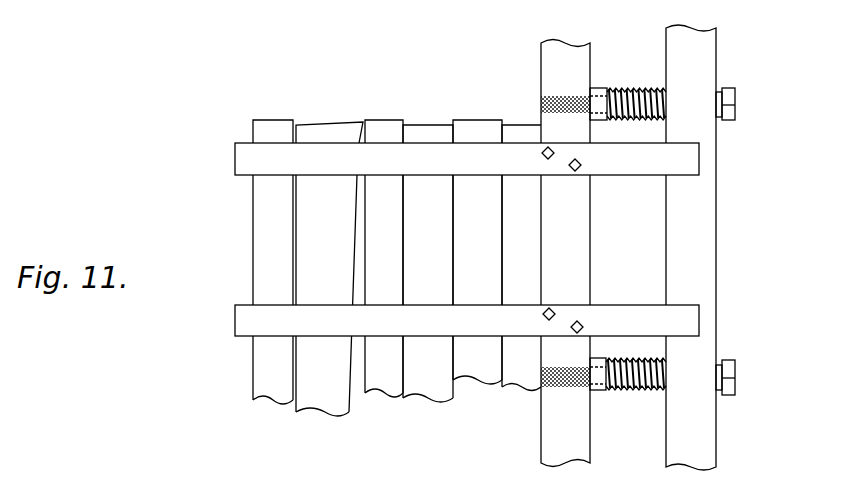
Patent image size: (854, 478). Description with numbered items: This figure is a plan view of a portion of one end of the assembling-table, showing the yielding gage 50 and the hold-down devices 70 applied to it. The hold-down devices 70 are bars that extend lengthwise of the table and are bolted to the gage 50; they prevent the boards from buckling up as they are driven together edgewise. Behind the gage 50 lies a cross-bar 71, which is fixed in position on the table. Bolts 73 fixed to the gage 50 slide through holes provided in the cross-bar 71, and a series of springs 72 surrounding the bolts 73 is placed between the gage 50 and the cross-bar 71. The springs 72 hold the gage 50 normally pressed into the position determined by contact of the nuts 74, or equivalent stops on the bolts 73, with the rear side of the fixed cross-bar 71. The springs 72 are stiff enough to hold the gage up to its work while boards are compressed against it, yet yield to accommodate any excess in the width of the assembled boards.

The gage 50 is at (553, 68).
The hold-down devices 70 is at (254, 152).
The cross-bar 71 is at (702, 241).
The springs 72 is at (621, 88).
The bolts 73 is at (719, 93).
The nuts 74 is at (735, 115).